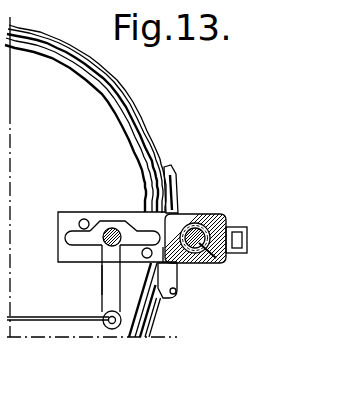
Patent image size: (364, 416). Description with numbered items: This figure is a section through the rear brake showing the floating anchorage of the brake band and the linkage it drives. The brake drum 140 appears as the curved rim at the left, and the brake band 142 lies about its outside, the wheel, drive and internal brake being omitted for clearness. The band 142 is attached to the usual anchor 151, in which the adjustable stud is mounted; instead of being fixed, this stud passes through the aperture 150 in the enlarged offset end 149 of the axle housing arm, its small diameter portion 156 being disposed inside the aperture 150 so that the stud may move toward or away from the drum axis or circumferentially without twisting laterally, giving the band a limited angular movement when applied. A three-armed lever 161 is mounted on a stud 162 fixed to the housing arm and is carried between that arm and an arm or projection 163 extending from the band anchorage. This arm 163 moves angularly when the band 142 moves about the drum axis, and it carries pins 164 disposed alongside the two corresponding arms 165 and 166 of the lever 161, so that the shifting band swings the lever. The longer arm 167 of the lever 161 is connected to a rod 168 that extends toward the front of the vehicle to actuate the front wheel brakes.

The brake drum 140 is at (128, 132).
The brake band 142 is at (140, 124).
The enlarged offset end 149 is at (207, 216).
The aperture 150 is at (187, 213).
The anchor 151 is at (170, 173).
The small diameter portion 156 is at (216, 258).
The three-armed lever 161 is at (108, 273).
The stud 162 is at (108, 251).
The arm or projection 163 is at (98, 212).
The pins 164 is at (81, 220).
The arm of three-armed lever 165 is at (64, 238).
The arm of three-armed lever 166 is at (132, 213).
The longer arm 167 is at (104, 291).
The rod 168 is at (49, 322).